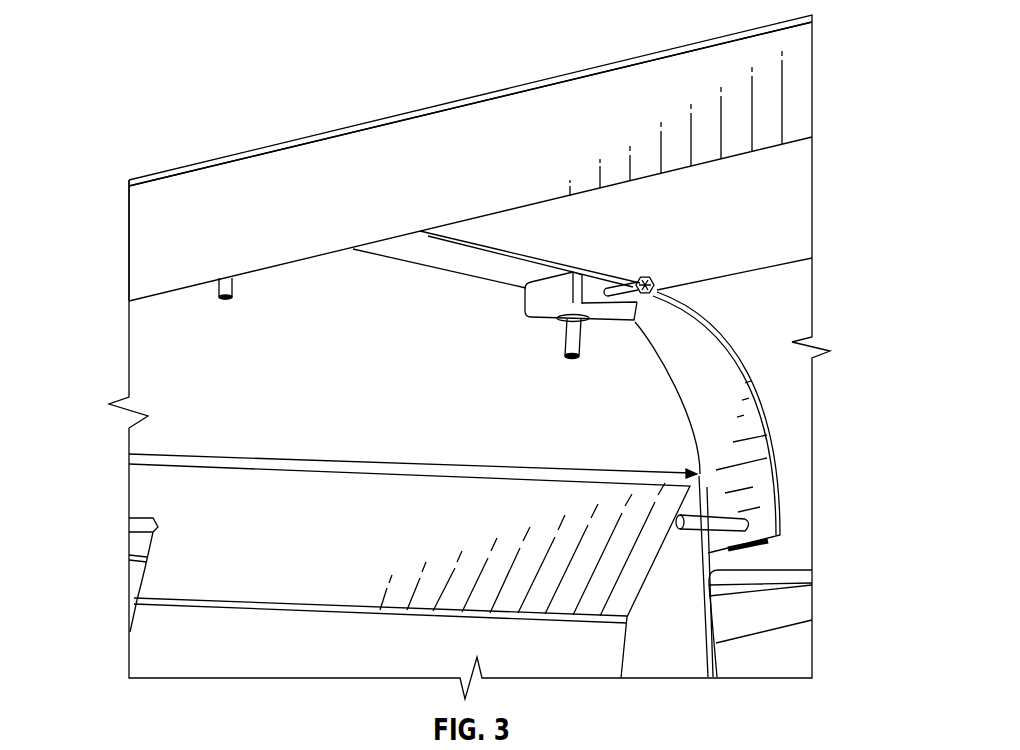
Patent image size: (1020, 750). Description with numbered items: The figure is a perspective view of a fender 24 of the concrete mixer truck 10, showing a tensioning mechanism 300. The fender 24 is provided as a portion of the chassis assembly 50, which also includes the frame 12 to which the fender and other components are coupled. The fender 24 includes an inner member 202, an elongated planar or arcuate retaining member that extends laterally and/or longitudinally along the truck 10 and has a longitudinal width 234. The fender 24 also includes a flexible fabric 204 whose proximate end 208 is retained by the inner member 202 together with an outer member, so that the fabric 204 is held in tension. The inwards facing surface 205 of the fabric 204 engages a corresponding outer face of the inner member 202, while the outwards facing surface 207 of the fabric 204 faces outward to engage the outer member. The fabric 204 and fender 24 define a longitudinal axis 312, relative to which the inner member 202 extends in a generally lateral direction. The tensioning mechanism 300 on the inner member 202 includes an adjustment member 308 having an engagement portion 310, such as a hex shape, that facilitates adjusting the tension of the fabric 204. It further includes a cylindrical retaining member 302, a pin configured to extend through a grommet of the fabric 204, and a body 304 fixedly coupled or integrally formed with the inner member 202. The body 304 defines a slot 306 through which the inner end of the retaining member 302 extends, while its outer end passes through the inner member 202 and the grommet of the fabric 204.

The concrete mixer truck 10 is at (121, 253).
The frame 12 is at (797, 651).
The fender 24 is at (263, 379).
The chassis assembly 50 is at (475, 170).
The inner member 202 is at (423, 255).
The fabric 204 is at (456, 118).
The inwards facing surface 205 is at (782, 201).
The outwards facing surface 207 is at (540, 81).
The proximate end 208 is at (107, 191).
The longitudinal width 234 is at (779, 453).
The tensioning mechanism 300 is at (550, 423).
The retaining member 302 is at (232, 291).
The body 304 is at (525, 300).
The slot 306 is at (563, 323).
The adjustment member 308 is at (619, 283).
The engagement portion 310 is at (655, 280).
The longitudinal axis 312 is at (638, 322).